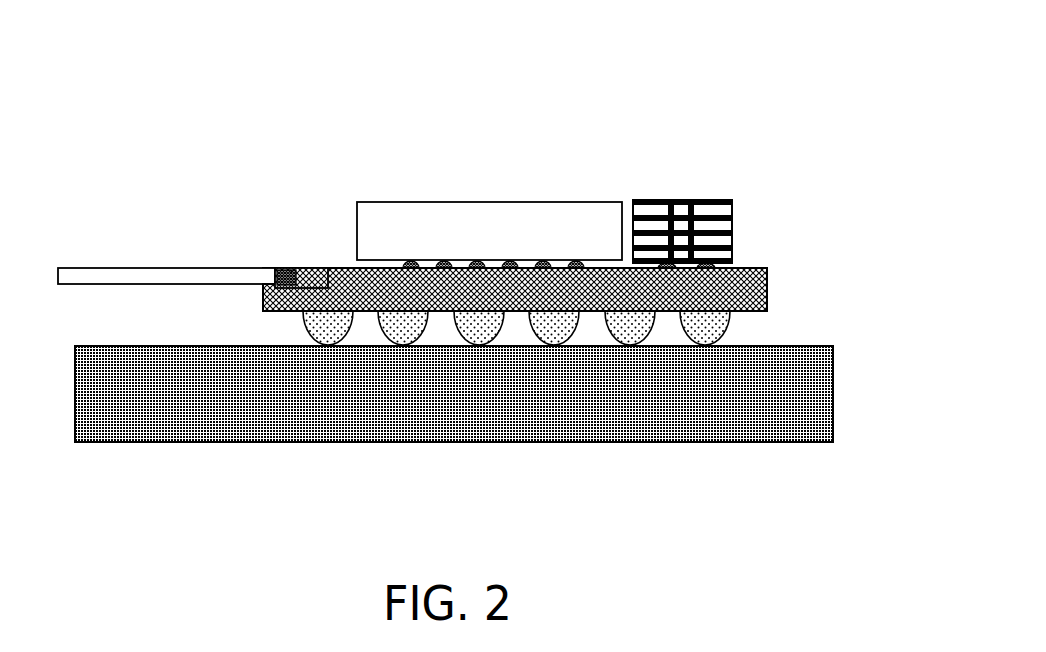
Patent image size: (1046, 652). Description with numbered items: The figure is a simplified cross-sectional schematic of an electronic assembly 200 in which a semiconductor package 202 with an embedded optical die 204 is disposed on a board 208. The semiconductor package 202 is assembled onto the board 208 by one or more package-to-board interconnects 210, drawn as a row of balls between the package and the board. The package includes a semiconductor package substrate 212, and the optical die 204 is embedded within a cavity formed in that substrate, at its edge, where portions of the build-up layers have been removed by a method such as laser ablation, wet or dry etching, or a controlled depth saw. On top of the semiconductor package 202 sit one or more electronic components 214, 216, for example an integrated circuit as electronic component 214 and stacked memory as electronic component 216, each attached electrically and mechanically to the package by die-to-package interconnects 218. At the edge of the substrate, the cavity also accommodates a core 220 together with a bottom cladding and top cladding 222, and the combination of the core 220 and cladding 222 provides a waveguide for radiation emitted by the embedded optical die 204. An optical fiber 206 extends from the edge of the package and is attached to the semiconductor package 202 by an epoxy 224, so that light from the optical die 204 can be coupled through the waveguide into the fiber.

The electronic assembly 200 is at (706, 44).
The semiconductor package 202 is at (784, 317).
The optical die 204 is at (320, 268).
The optical fiber 206 is at (155, 268).
The board 208 is at (613, 375).
The package-to-board interconnects 210 is at (402, 345).
The semiconductor package substrate 212 is at (750, 306).
The electronic component 214 is at (525, 212).
The electronic component 216 is at (719, 210).
The die-to-package interconnects 218 is at (408, 264).
The core 220 is at (300, 270).
The cladding 222 is at (290, 270).
The epoxy 224 is at (262, 289).